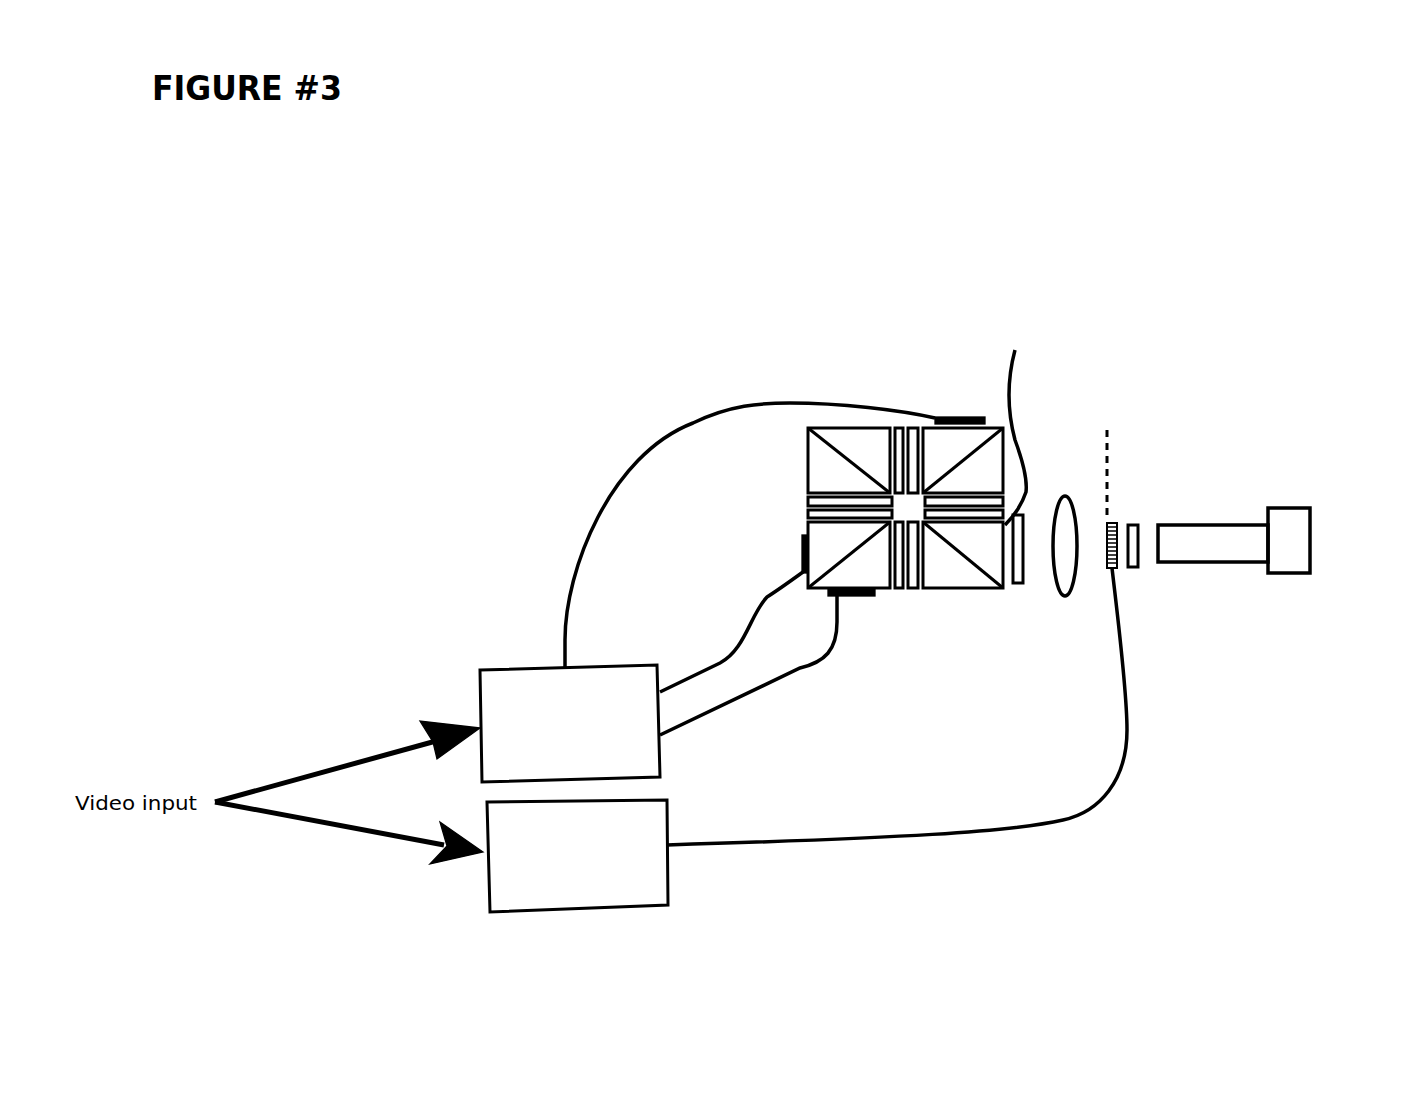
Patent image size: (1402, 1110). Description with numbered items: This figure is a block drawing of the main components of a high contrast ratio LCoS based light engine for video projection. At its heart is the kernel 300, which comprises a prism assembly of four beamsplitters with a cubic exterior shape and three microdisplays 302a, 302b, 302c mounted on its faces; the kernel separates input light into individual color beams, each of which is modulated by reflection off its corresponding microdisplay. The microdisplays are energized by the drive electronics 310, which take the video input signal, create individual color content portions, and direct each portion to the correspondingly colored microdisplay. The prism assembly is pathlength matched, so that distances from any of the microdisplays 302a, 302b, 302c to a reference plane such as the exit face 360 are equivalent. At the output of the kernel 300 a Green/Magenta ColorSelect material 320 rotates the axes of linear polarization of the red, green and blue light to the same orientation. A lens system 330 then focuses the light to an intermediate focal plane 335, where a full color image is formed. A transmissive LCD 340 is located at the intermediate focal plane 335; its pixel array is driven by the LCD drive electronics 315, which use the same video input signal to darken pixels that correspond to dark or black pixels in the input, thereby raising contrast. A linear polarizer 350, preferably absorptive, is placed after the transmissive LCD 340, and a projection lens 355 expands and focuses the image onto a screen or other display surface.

The kernel 300 is at (777, 478).
The microdisplay 302a is at (950, 408).
The microdisplay 302b is at (802, 552).
The microdisplay 302c is at (860, 603).
The drive electronics 310 is at (638, 776).
The LCD drive electronics 315 is at (643, 906).
The Green/Magenta ColorSelect material 320 is at (1021, 590).
The lens system 330 is at (1069, 605).
The intermediate focal plane 335 is at (1107, 447).
The transmissive LCD 340 is at (1120, 517).
The linear polarizer 350 is at (1142, 519).
The projection lens 355 is at (1203, 562).
The exit face 360 is at (1009, 408).